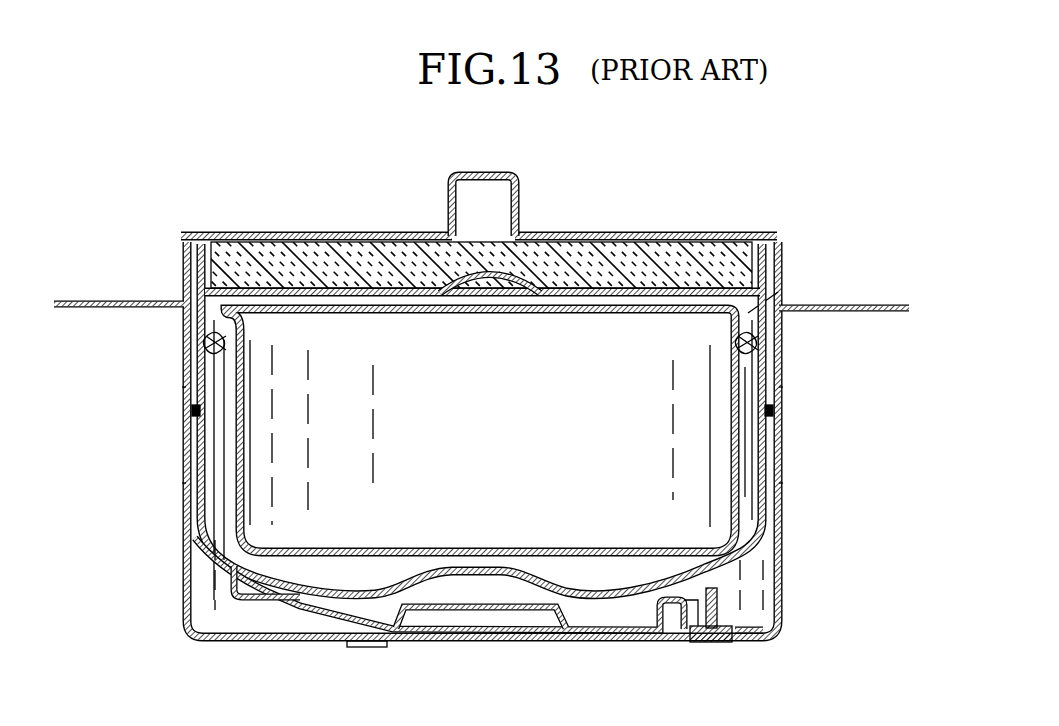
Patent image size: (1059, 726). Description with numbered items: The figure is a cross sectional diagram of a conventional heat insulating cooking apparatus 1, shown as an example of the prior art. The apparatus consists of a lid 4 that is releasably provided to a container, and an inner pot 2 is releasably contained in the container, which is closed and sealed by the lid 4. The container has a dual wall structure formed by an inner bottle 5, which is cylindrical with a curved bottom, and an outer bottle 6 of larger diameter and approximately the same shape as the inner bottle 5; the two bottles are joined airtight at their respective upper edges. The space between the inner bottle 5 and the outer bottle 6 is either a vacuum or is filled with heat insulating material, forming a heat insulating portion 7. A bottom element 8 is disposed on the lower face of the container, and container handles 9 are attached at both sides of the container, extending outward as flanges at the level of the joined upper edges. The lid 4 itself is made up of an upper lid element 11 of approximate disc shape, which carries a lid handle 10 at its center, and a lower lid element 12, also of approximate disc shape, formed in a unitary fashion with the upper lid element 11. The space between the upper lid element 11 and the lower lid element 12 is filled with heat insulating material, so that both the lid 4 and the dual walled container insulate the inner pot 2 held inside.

The heat insulating cooking apparatus 1 is at (514, 404).
The inner pot 2 is at (777, 293).
The lid 4 is at (479, 191).
The inner bottle 5 is at (768, 477).
The outer bottle 6 is at (779, 431).
The heat insulating portion 7 is at (771, 411).
The bottom element 8 is at (786, 588).
The container handle 9 is at (68, 302).
The lid handle 10 is at (487, 210).
The upper lid element 11 is at (381, 236).
The lower lid element 12 is at (300, 286).